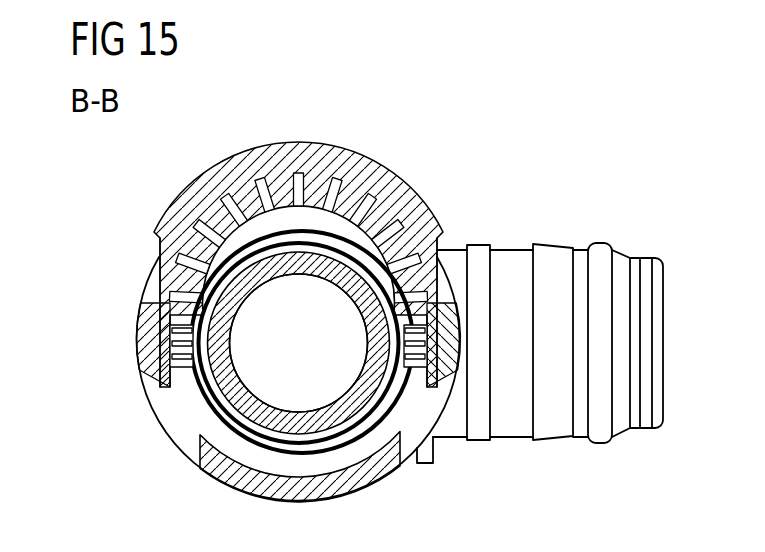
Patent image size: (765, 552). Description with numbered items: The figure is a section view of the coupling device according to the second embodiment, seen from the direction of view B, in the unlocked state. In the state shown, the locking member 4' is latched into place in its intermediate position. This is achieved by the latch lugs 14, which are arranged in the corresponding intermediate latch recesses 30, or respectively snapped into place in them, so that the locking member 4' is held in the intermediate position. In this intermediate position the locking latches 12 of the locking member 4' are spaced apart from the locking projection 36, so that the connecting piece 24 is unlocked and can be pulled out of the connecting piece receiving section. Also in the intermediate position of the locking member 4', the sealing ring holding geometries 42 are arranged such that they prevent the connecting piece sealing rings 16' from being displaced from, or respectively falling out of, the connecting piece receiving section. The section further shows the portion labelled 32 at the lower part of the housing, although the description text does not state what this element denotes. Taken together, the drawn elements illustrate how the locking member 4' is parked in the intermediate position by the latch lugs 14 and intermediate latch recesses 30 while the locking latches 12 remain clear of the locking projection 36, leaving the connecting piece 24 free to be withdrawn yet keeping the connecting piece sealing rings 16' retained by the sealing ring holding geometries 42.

The locking latches 12 is at (317, 185).
The locking member 4' is at (298, 264).
The connecting piece sealing rings 16' is at (263, 312).
The sealing ring holding geometries 42 is at (172, 336).
The latch lugs 14 is at (172, 355).
The intermediate latch recesses 30 is at (153, 377).
The locking projection 36 is at (307, 249).
The connecting piece 24 is at (257, 408).
The bottom segment 32 is at (190, 443).